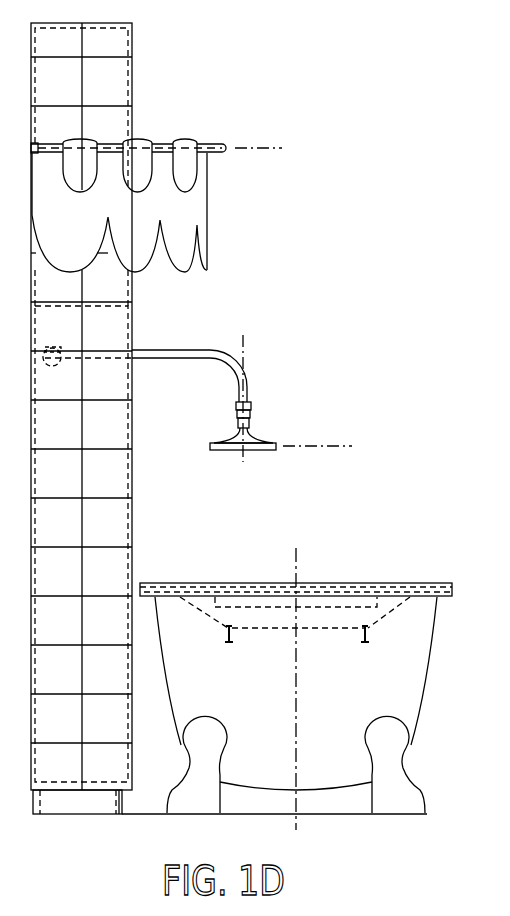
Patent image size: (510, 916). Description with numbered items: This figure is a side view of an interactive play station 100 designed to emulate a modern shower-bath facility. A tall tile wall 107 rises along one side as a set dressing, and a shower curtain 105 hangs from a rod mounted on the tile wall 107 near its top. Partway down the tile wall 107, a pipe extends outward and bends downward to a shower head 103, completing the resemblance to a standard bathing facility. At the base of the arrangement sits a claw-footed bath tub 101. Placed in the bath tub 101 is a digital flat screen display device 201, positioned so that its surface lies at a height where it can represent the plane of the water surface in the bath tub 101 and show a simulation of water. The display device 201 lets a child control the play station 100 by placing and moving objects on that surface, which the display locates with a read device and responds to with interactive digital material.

The interactive play station 100 is at (423, 500).
The bath tub 101 is at (400, 680).
The shower head 103 is at (248, 390).
The shower curtain 105 is at (200, 194).
The tile wall 107 is at (133, 86).
The digital flat screen display device 201 is at (380, 608).